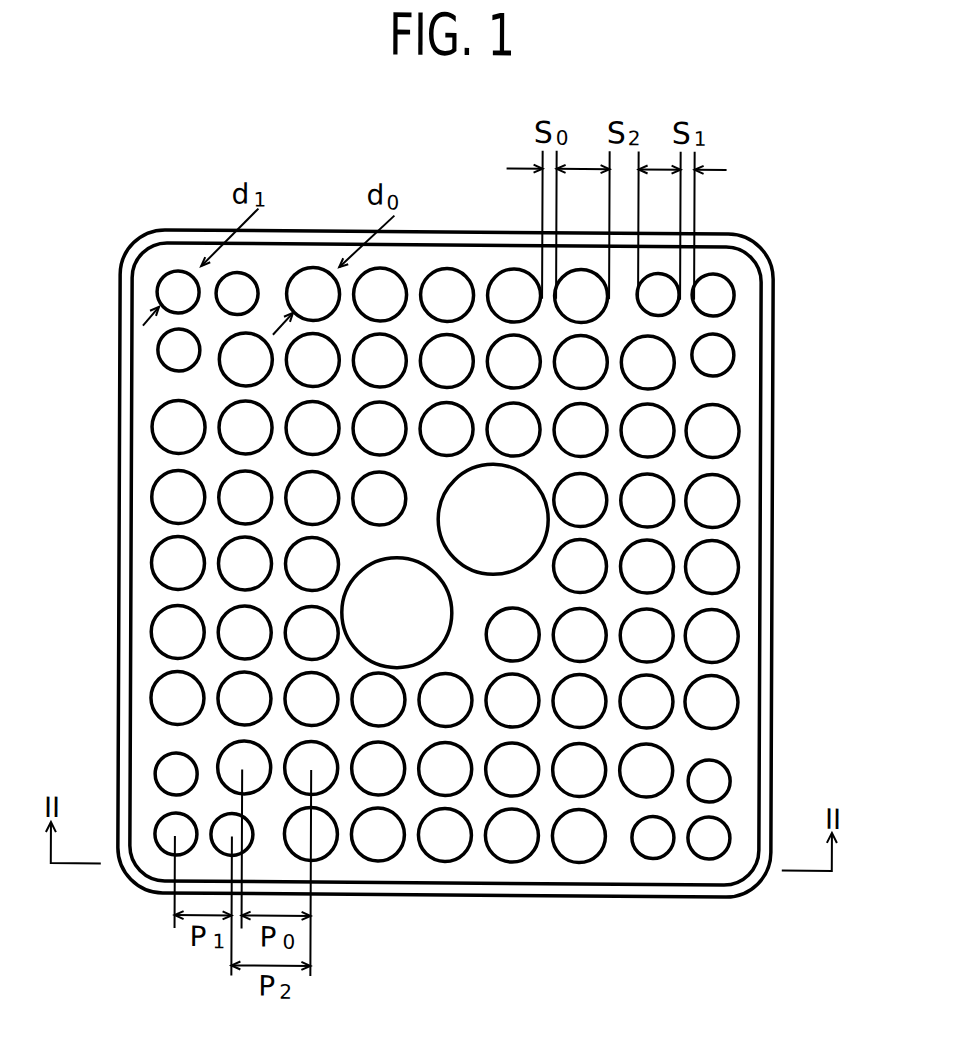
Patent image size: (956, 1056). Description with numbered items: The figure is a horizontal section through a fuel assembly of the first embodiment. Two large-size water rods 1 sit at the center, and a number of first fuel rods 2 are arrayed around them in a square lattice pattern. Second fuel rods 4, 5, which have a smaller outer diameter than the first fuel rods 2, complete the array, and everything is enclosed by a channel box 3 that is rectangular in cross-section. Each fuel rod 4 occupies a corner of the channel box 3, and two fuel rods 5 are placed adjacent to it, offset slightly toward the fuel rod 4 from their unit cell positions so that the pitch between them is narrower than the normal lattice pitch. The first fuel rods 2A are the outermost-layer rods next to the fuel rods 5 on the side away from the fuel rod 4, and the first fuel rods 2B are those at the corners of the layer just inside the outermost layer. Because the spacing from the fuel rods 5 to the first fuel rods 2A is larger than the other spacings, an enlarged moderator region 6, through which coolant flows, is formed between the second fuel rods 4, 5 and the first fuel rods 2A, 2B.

The water rod 1 is at (423, 612).
The first fuel rod 2 is at (710, 637).
The first fuel rod in outermost layer 2A is at (165, 693).
The first fuel rod at inner-layer corner 2B is at (227, 757).
The channel box 3 is at (760, 795).
The second fuel rod at corner 4 is at (176, 292).
The second fuel rod adjacent to corner rod 5 is at (243, 294).
The moderator region 6 is at (208, 373).